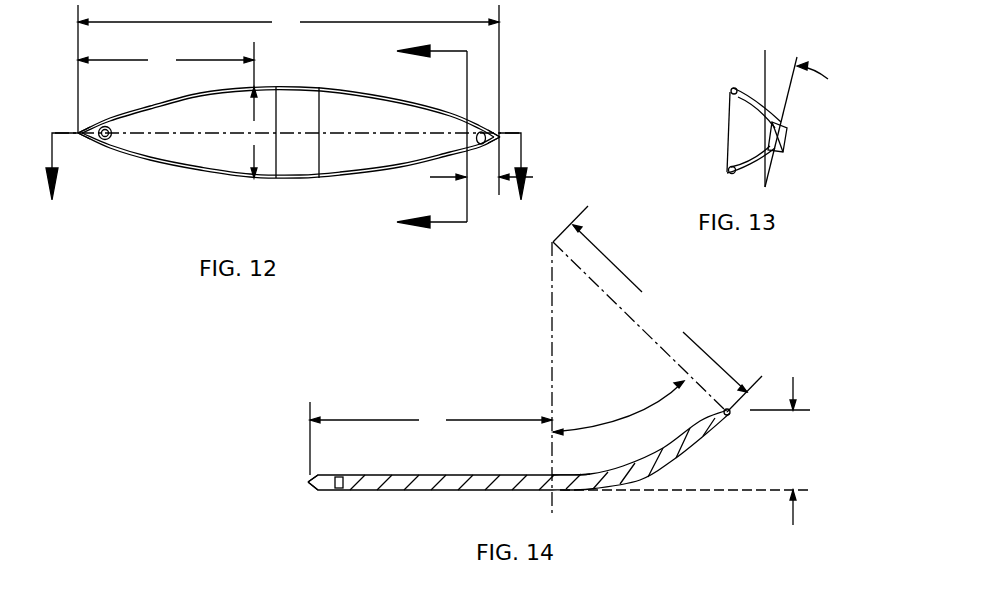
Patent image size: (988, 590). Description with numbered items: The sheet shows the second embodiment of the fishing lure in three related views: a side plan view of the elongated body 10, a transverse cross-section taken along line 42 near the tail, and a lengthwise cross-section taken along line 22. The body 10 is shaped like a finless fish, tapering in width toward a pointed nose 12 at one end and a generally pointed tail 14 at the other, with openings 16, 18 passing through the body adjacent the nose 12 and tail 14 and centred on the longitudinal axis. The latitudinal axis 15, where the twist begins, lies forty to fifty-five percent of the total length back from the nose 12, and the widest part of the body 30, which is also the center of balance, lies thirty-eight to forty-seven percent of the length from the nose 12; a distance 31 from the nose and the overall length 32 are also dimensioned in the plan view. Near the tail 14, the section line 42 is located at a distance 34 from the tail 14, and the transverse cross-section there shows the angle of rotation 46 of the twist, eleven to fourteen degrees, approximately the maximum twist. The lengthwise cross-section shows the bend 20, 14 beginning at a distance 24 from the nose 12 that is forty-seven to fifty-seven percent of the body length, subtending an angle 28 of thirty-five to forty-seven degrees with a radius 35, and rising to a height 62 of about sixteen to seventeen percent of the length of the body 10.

In FIG. 12, the elongated body 10 is at (161, 219).
In FIG. 14, the elongated body 10 is at (406, 544).
In FIG. 12, the pointed nose 12 is at (78, 132).
In FIG. 14, the pointed nose 12 is at (308, 484).
In FIG. 12, the generally pointed tail 14 is at (502, 136).
In FIG. 14, the generally pointed tail 14 is at (733, 413).
In FIG. 12, the latitudinal axis 15 is at (276, 181).
In FIG. 12, the opening 16 is at (105, 126).
In FIG. 14, the opening 16 is at (344, 477).
In FIG. 12, the opening 18 is at (481, 132).
In FIG. 12, the bend start 20 is at (319, 181).
In FIG. 14, the bend start 20 is at (549, 474).
In FIG. 12, the section line 22- 22 is at (287, 182).
In FIG. 14, the distance to bend 24 is at (431, 438).
In FIG. 14, the bend angle 28 is at (618, 408).
In FIG. 12, the widest part of the body 30 is at (251, 132).
In FIG. 12, the distance of cross-section from nose 31 is at (166, 64).
In FIG. 12, the overall length 32 is at (288, 100).
In FIG. 12, the distance from tail to cross-section 42-42 34 is at (481, 177).
In FIG. 14, the bend radius 35 is at (657, 309).
In FIG. 12, the section line 42- 42 is at (418, 134).
In FIG. 13, the angle of rotation of the twist 46 is at (764, 63).
In FIG. 14, the height of the bend 62 is at (780, 451).